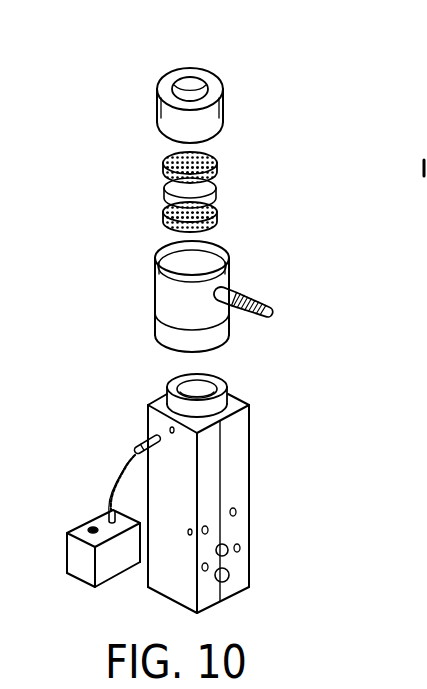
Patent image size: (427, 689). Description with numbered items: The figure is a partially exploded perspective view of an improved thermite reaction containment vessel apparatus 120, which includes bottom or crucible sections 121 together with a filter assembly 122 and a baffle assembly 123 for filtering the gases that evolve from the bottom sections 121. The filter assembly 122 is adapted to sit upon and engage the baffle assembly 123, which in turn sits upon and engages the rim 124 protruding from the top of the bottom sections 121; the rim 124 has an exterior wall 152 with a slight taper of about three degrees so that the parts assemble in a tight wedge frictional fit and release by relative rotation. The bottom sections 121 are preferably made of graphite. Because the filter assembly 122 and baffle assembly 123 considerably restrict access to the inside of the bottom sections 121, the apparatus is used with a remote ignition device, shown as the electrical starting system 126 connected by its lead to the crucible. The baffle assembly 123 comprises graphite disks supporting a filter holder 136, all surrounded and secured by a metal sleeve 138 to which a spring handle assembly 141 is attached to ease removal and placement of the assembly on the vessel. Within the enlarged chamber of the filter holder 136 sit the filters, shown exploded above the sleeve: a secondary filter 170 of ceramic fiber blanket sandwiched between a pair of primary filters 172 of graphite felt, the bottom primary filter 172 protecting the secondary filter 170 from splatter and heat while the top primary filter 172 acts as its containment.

The thermite reaction containment vessel apparatus 120 is at (229, 68).
The bottom or crucible sections 121 is at (240, 452).
The filter assembly 122 is at (225, 148).
The baffle assembly 123 is at (233, 278).
The rim 124 is at (226, 385).
The electrical starting system 126 is at (78, 527).
The filter holder 136 is at (224, 101).
The metal sleeve 138 is at (167, 300).
The spring handle assembly 141 is at (271, 311).
The exterior wall 152 is at (174, 408).
The secondary filter 170 is at (166, 196).
The primary filters 172 is at (218, 160).